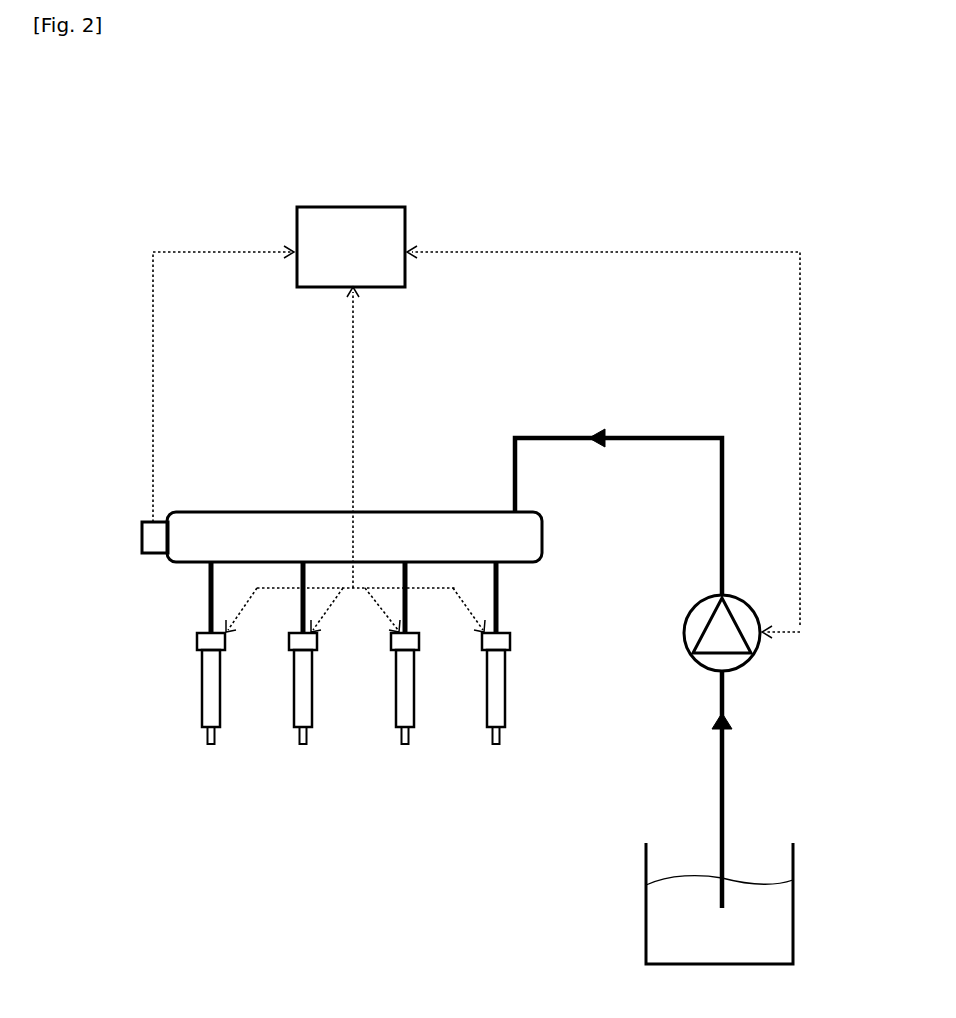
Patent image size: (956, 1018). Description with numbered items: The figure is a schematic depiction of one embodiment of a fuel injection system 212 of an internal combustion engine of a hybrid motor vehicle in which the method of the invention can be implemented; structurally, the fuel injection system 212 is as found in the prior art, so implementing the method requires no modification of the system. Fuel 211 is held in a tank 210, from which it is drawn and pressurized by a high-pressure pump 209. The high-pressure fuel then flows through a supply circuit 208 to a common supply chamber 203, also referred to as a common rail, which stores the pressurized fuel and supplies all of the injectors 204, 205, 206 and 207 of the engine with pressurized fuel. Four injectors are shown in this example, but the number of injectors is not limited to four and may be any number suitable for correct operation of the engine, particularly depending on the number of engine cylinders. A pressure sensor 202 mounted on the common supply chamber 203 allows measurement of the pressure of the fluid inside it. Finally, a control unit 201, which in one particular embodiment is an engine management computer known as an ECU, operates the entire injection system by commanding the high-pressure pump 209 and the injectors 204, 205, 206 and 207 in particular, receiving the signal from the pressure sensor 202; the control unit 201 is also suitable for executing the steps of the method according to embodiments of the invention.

The control unit 201 is at (327, 205).
The pressure sensor 202 is at (142, 536).
The common supply chamber 203 is at (250, 512).
The injector 204 is at (202, 678).
The injector 205 is at (293, 678).
The injector 206 is at (395, 678).
The injector 207 is at (487, 678).
The supply circuit 208 is at (720, 570).
The high-pressure pump 209 is at (748, 656).
The tank 210 is at (646, 920).
The fuel 211 is at (774, 930).
The fuel injection system 212 is at (184, 120).